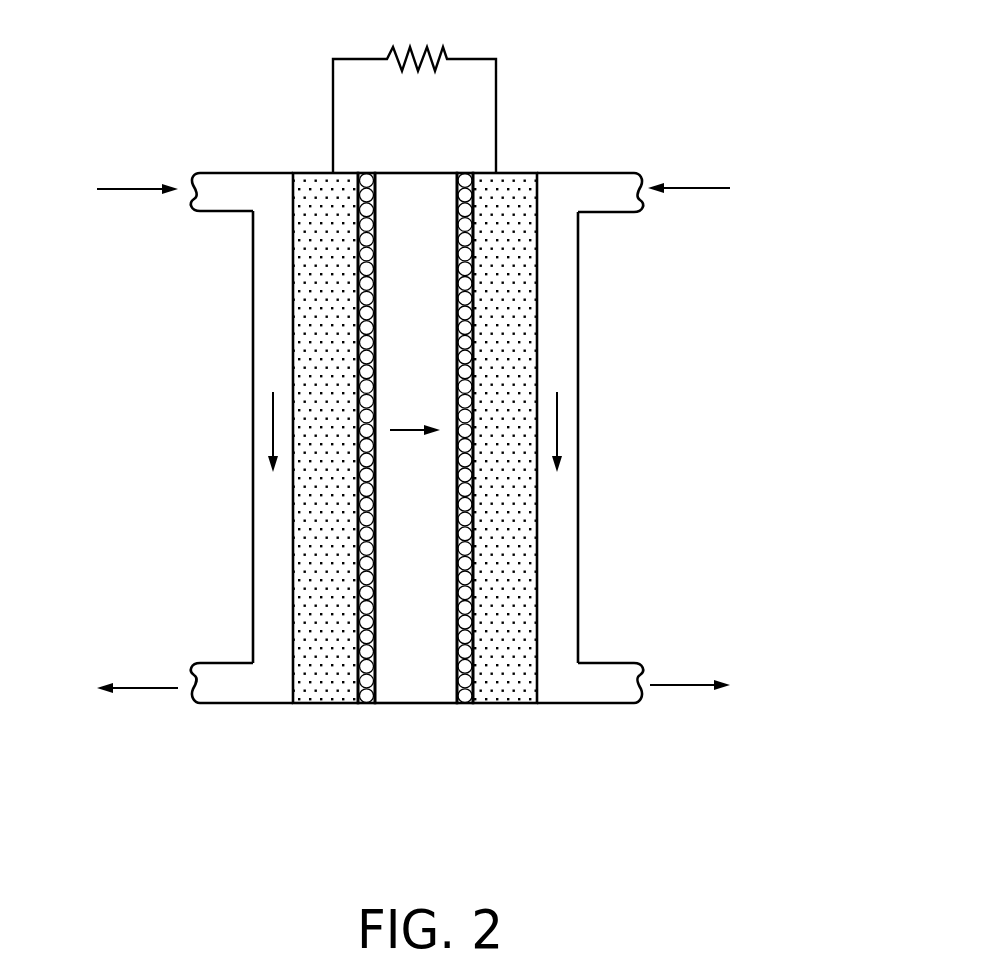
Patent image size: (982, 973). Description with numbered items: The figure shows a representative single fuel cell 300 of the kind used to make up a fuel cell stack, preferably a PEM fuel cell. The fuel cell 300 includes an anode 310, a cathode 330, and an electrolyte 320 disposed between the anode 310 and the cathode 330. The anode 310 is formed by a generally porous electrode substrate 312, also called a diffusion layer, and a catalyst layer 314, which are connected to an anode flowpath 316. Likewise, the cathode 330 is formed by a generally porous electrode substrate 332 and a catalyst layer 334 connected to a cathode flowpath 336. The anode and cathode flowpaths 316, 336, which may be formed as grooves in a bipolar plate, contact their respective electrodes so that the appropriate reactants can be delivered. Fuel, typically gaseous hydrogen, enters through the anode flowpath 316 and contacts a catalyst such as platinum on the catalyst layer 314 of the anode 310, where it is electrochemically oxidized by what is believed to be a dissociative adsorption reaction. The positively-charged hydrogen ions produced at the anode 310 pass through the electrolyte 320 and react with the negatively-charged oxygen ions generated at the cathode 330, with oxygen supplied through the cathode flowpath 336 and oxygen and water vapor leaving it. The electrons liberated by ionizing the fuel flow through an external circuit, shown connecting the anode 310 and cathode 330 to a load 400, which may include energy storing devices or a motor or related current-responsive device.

The fuel cell 300 is at (177, 80).
The anode 310 is at (362, 705).
The porous electrode substrate 312 is at (305, 173).
The catalyst layer 314 is at (362, 173).
The anode flowpath 316 is at (260, 295).
The electrolyte 320 is at (462, 705).
The cathode 330 is at (542, 705).
The porous electrode substrate 332 is at (530, 173).
The catalyst layer 334 is at (464, 173).
The cathode flowpath 336 is at (570, 295).
The load 400 is at (433, 45).